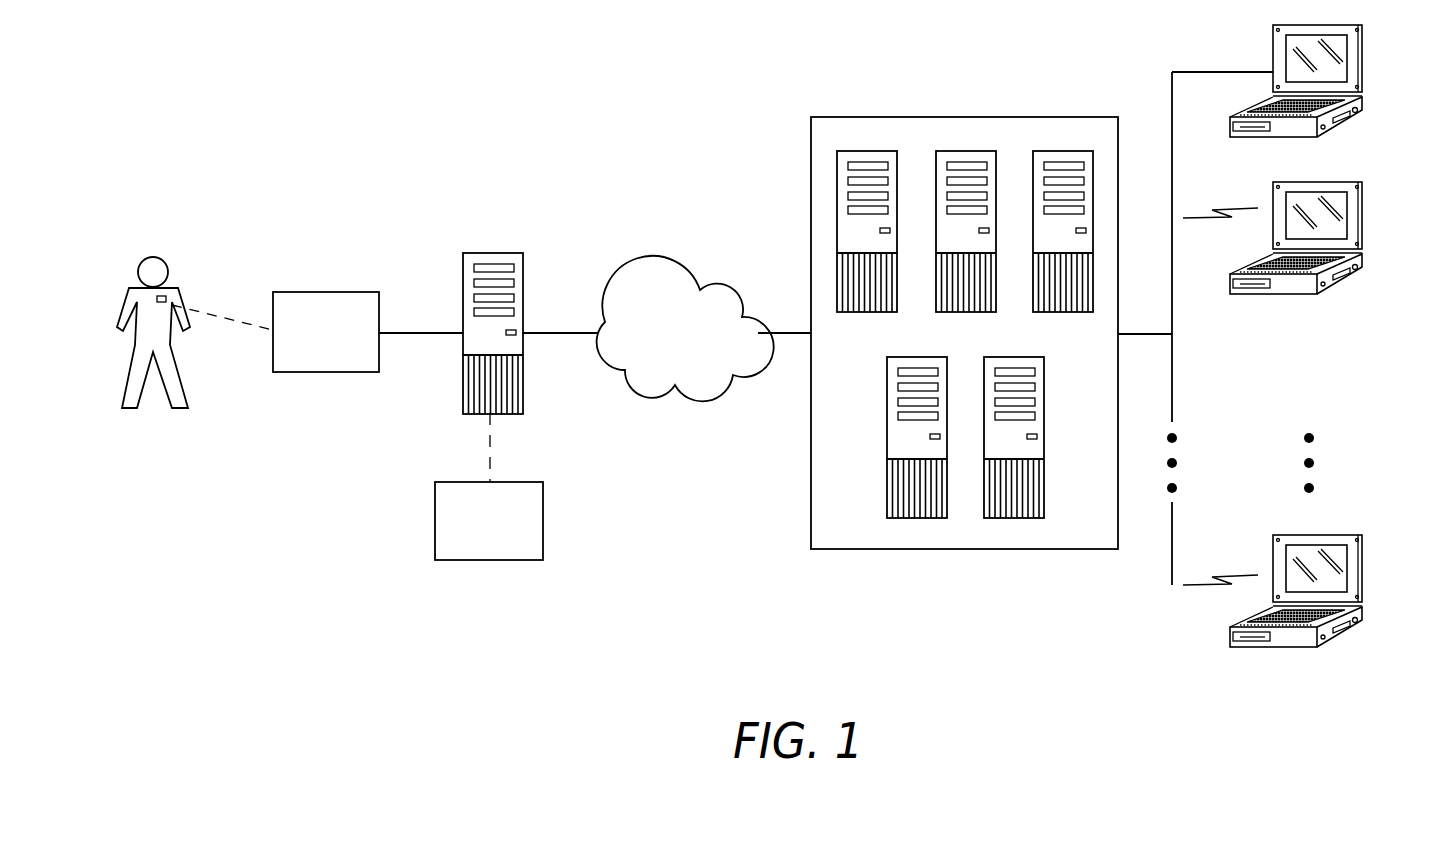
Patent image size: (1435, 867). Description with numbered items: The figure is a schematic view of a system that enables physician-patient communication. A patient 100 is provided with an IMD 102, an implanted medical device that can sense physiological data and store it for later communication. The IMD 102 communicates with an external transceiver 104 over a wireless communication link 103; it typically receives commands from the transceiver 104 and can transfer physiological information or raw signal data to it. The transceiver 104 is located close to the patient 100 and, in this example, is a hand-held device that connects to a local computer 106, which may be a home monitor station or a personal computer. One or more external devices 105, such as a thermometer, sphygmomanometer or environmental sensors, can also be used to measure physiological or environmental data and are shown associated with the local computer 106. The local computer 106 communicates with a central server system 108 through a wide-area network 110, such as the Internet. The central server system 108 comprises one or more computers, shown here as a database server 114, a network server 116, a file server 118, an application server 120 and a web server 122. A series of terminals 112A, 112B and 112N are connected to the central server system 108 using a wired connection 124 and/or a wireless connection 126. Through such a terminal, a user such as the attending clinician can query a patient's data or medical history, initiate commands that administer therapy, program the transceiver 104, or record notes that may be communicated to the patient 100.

The patient 100 is at (152, 257).
The IMD 102 is at (167, 296).
The wireless communication link 103 is at (219, 318).
The external transceiver 104 is at (327, 292).
The external devices 105 is at (435, 521).
The local computer 106 is at (490, 253).
The central server system 108 is at (838, 117).
The wide-area network 110 is at (667, 272).
The terminal 112A is at (1364, 57).
The terminal 112B is at (1364, 214).
The terminal 112N is at (1364, 567).
The database server 114 is at (867, 151).
The network server 116 is at (954, 151).
The file server 118 is at (1052, 151).
The application server 120 is at (903, 357).
The web server 122 is at (1000, 357).
The wired connection 124 is at (1202, 72).
The wireless connection 126 is at (1194, 217).